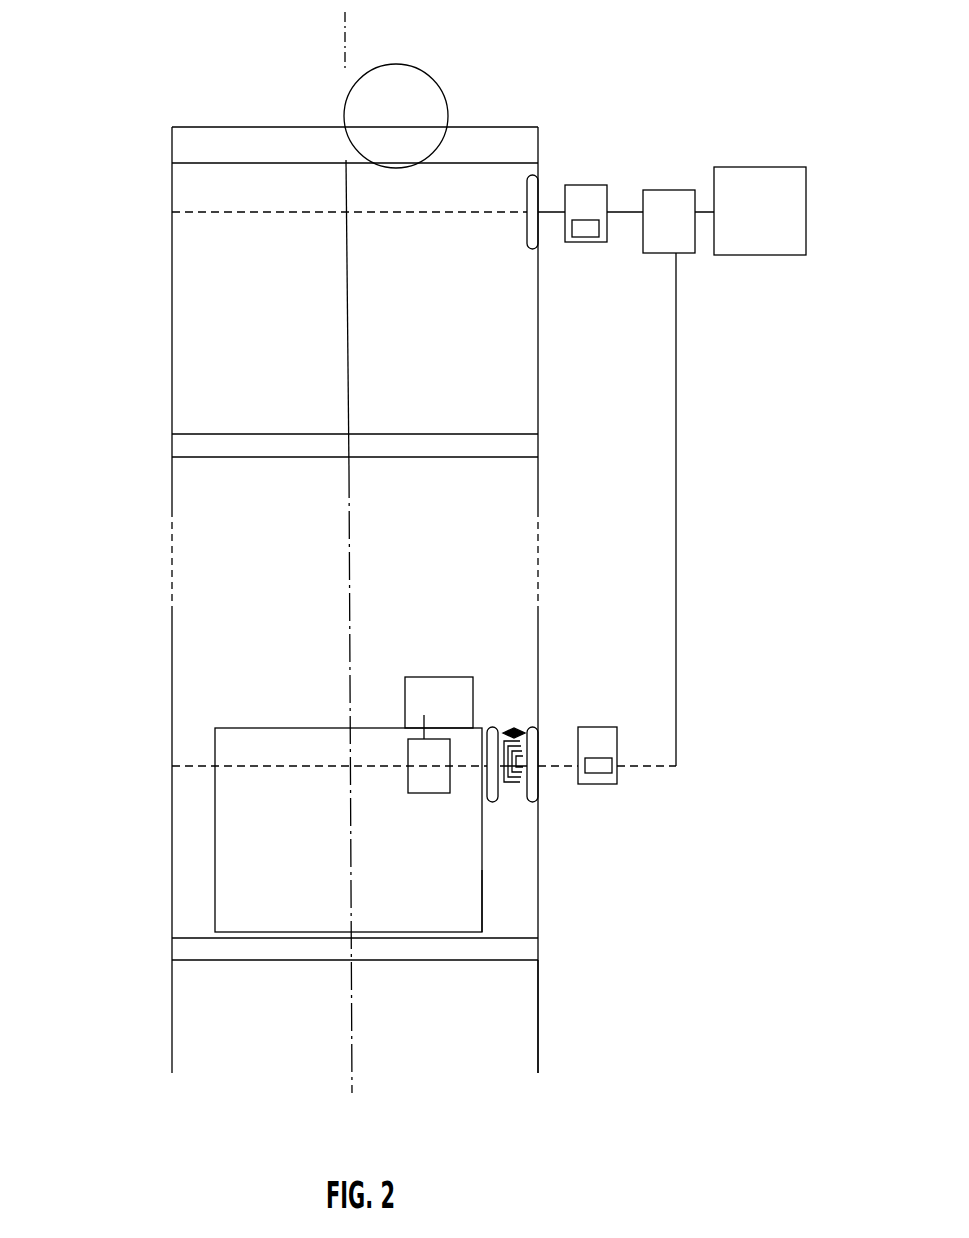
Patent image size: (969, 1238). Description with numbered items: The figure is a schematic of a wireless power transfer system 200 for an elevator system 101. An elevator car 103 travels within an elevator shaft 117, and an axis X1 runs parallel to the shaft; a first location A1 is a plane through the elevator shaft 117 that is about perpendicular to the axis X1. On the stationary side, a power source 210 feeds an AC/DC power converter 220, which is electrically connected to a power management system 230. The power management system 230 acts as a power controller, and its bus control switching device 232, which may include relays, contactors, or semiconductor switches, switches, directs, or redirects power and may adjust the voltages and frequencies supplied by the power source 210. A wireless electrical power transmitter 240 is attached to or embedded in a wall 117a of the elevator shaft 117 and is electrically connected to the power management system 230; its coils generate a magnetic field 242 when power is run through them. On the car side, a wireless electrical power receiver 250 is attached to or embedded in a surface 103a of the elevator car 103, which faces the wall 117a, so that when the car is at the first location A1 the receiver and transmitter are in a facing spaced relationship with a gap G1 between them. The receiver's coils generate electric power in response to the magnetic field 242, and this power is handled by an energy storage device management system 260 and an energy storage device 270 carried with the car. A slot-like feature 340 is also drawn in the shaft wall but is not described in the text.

The elevator system 101 is at (83, 123).
The wireless power transfer system 200 is at (873, 110).
The elevator car 103 is at (283, 890).
The surface of the elevator car 103a is at (482, 882).
The elevator shaft 117 is at (278, 606).
The wall of the elevator shaft 117a is at (538, 1008).
The power source 210 is at (740, 243).
The AC/DC power converter 220 is at (660, 245).
The power management system 230 is at (596, 185).
The bus control switching device 232 is at (590, 237).
The wireless electrical power transmitter 240 is at (533, 728).
The magnetic field 242 is at (505, 783).
The wireless electrical power receiver 250 is at (502, 795).
The energy storage device management system 260 is at (424, 780).
The energy storage device 270 is at (440, 698).
The guide slot 340 is at (530, 250).
The first location A1 is at (396, 214).
The gap G1 is at (513, 730).
The axis X1 is at (350, 1073).